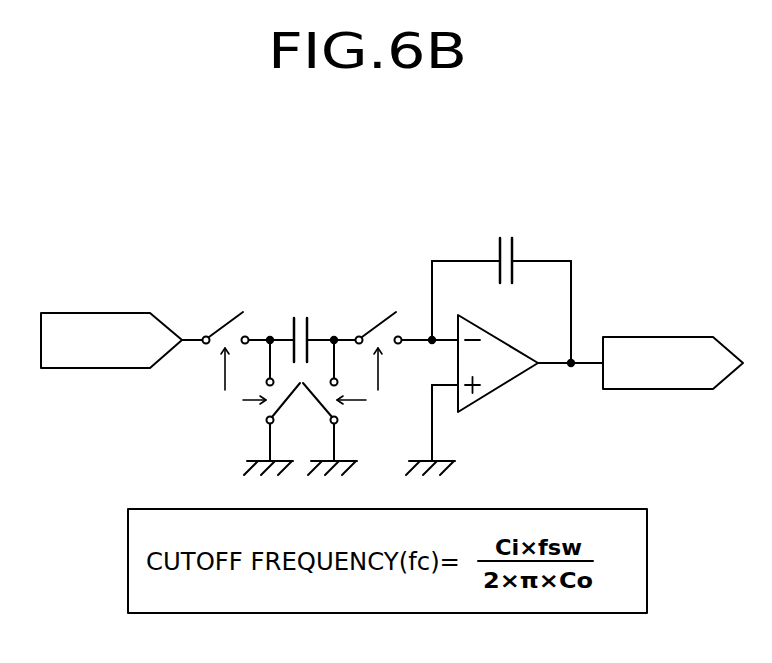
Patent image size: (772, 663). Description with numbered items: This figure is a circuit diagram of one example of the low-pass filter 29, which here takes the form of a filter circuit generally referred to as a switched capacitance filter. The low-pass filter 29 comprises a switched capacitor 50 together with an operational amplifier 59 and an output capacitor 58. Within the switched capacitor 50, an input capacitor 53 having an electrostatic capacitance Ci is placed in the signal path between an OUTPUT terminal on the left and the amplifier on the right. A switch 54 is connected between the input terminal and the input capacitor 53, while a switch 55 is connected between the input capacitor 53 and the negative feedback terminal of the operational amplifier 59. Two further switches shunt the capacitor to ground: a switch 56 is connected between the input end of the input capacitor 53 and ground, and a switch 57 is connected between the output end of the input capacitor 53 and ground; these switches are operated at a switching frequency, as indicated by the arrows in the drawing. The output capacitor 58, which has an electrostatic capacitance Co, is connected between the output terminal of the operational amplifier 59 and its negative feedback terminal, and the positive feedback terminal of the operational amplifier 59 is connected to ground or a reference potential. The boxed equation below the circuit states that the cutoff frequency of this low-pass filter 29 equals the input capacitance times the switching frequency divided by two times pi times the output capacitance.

The low-pass filter 29 is at (392, 285).
The switched capacitor 50 is at (320, 322).
The input capacitor 53 is at (312, 322).
The switch 54 is at (230, 322).
The switch 55 is at (383, 323).
The switch 56 is at (265, 418).
The switch 57 is at (337, 418).
The output capacitor 58 is at (513, 252).
The operational amplifier 59 is at (500, 388).